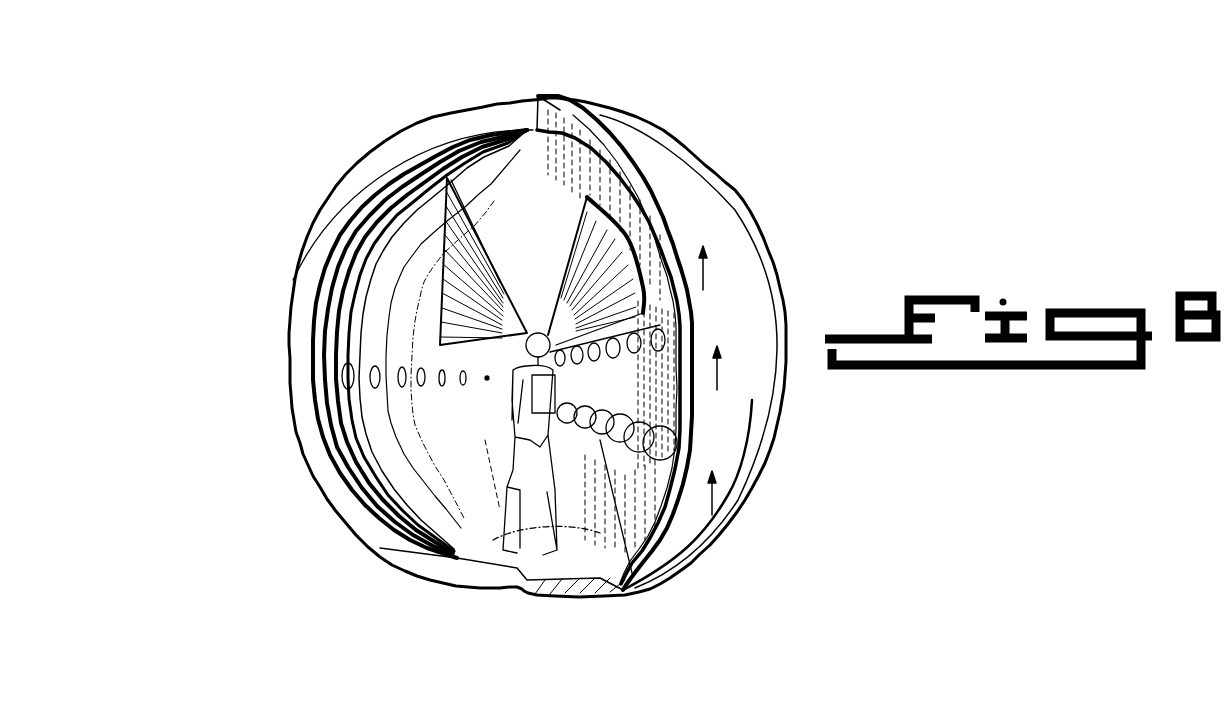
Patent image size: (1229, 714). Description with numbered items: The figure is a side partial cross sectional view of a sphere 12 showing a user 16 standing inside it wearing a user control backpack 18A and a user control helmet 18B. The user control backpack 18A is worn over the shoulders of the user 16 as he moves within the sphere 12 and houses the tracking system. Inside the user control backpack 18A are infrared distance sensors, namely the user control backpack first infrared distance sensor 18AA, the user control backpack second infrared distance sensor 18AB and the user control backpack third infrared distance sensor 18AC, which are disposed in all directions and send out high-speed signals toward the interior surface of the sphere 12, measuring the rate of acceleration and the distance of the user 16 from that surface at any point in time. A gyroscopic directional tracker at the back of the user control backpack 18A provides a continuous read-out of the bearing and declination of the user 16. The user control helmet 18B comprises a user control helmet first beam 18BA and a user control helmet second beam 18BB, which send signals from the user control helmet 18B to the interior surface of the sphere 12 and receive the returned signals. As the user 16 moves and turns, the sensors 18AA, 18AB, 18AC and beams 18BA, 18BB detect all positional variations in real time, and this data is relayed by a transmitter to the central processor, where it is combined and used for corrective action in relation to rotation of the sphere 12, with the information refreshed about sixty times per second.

The sphere 12 is at (630, 112).
The user 16 is at (510, 437).
The user control backpack 18A is at (545, 392).
The user control backpack first infrared distance sensor 18AA is at (420, 380).
The user control backpack second infrared distance sensor 18AB is at (640, 312).
The user control backpack third infrared distance sensor 18AC is at (625, 565).
The user control helmet 18B is at (643, 280).
The user control helmet first beam 18BA is at (400, 172).
The user control helmet second beam 18BB is at (575, 227).